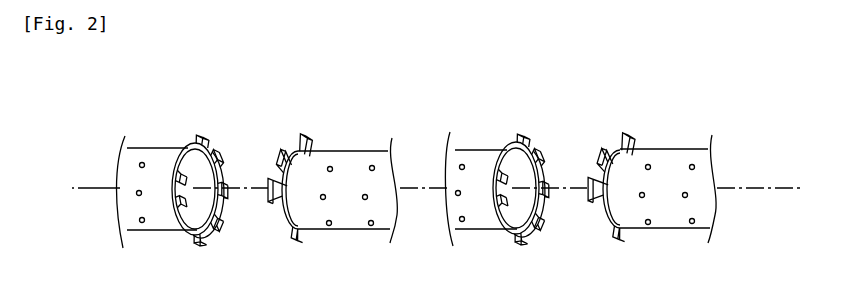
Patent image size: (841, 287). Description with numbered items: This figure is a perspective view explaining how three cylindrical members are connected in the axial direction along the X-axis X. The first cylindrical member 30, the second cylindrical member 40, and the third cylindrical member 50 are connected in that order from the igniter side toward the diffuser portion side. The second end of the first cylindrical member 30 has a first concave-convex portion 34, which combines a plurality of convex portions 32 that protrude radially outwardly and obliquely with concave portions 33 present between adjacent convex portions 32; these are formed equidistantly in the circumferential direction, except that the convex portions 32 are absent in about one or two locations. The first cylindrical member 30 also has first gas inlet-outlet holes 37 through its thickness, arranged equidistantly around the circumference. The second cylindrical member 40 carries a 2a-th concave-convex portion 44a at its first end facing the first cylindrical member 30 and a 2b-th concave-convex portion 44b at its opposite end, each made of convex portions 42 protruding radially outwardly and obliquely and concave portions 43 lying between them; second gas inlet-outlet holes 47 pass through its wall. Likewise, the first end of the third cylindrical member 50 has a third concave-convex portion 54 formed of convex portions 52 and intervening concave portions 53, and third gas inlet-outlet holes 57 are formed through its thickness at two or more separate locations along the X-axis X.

The first cylindrical member 30 is at (157, 178).
The first gas inlet-outlet holes 37 is at (141, 224).
The first concave-convex portion 34 is at (219, 179).
The convex portions 32 is at (207, 138).
The concave portions 33 is at (225, 148).
The second cylindrical member 40 is at (392, 170).
The 2a-th concave-convex portion 44a is at (308, 100).
The 2b-th concave-convex portion 44b is at (572, 103).
The convex portions 42 is at (295, 140).
The concave portions 43 is at (279, 150).
The second gas inlet-outlet holes 47 is at (331, 226).
The third cylindrical member 50 is at (650, 169).
The third concave-convex portion 54 is at (610, 154).
The convex portions 52 is at (616, 138).
The concave portions 53 is at (601, 150).
The third gas inlet-outlet holes 57 is at (650, 226).
The X-axis X is at (445, 188).